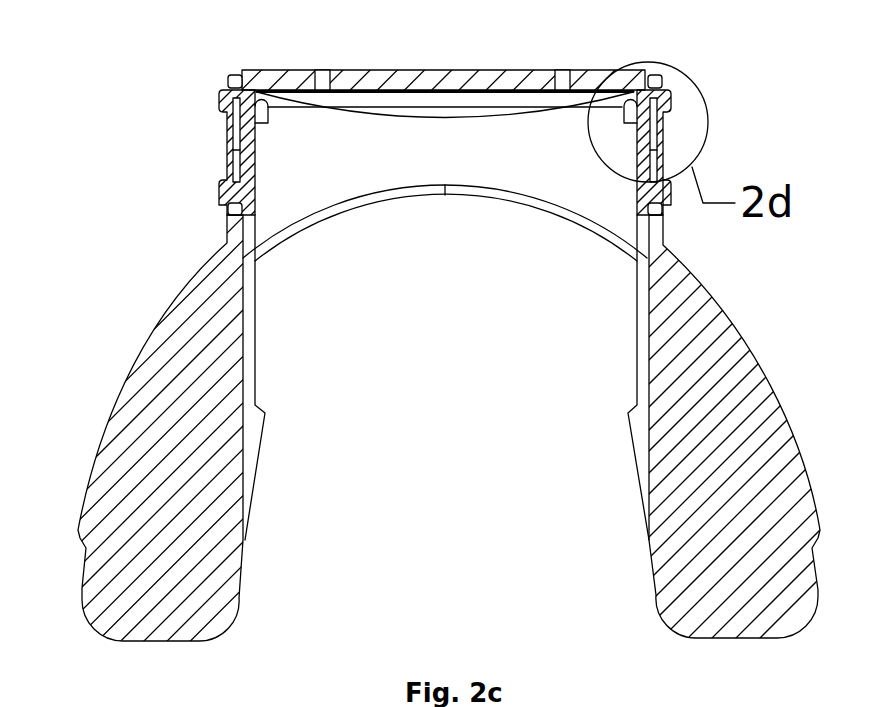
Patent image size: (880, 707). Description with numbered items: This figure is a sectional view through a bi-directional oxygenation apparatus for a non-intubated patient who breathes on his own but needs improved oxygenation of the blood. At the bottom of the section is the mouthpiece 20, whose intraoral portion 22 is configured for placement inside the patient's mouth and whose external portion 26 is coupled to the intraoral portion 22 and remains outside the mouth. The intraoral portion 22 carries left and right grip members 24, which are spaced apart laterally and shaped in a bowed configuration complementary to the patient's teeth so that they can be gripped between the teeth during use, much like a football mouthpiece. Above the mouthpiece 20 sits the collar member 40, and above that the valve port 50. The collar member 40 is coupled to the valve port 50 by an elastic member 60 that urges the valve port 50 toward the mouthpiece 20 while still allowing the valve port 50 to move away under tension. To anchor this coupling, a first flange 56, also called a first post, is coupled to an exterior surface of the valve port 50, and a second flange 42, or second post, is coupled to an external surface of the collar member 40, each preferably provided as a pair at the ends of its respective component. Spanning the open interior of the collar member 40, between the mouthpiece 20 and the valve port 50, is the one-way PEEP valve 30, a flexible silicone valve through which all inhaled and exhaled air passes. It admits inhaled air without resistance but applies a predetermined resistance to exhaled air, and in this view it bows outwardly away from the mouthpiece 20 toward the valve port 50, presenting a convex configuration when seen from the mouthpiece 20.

The mouthpiece 20 is at (66, 638).
The intraoral portion 22 is at (615, 532).
The grip members 24 is at (118, 421).
The external portion 26 is at (280, 229).
The one-way PEEP valve 30 is at (418, 105).
The collar member 40 is at (250, 172).
The second flange 42 is at (668, 195).
The valve port 50 is at (487, 75).
The first flange 56 is at (665, 94).
The elastic member 60 is at (652, 70).